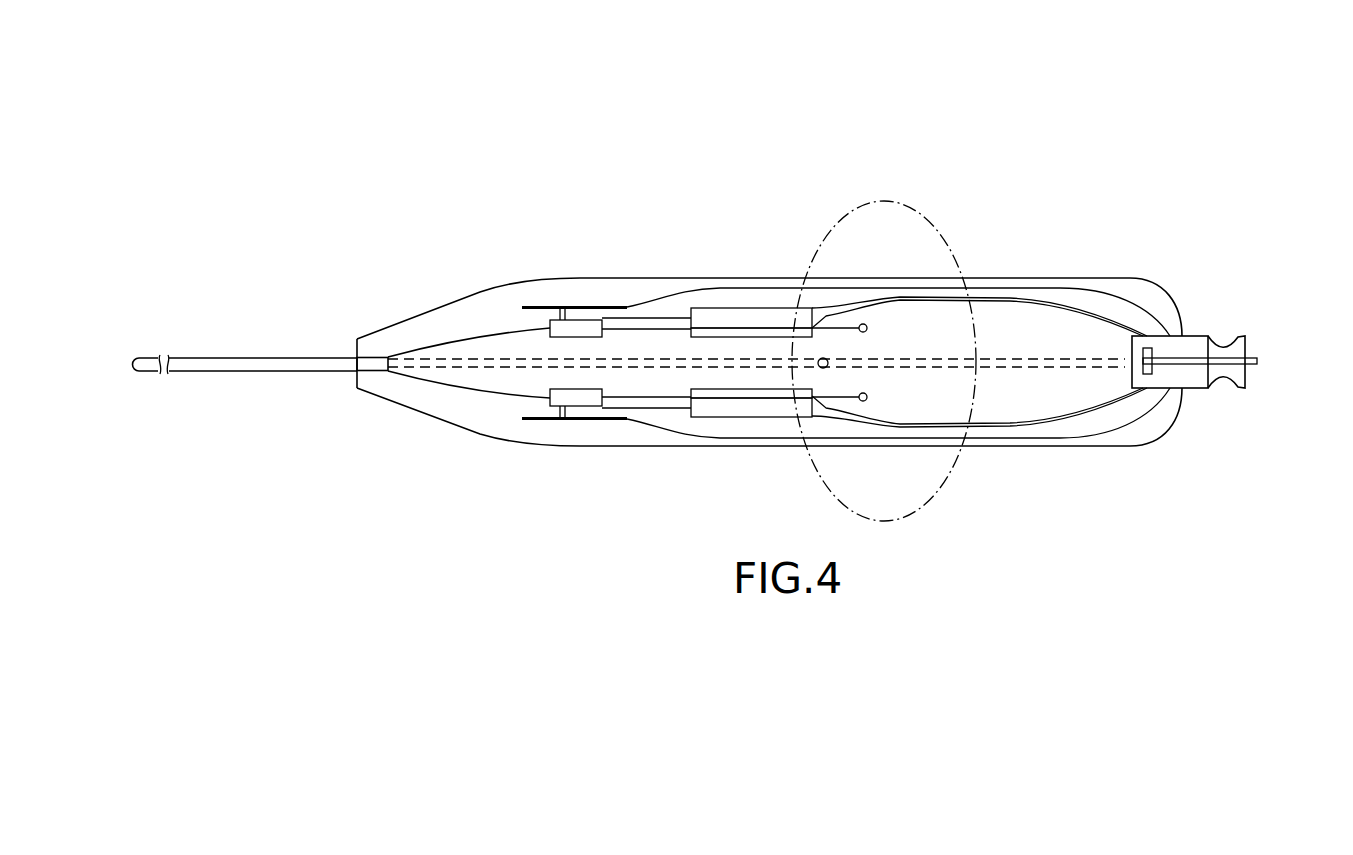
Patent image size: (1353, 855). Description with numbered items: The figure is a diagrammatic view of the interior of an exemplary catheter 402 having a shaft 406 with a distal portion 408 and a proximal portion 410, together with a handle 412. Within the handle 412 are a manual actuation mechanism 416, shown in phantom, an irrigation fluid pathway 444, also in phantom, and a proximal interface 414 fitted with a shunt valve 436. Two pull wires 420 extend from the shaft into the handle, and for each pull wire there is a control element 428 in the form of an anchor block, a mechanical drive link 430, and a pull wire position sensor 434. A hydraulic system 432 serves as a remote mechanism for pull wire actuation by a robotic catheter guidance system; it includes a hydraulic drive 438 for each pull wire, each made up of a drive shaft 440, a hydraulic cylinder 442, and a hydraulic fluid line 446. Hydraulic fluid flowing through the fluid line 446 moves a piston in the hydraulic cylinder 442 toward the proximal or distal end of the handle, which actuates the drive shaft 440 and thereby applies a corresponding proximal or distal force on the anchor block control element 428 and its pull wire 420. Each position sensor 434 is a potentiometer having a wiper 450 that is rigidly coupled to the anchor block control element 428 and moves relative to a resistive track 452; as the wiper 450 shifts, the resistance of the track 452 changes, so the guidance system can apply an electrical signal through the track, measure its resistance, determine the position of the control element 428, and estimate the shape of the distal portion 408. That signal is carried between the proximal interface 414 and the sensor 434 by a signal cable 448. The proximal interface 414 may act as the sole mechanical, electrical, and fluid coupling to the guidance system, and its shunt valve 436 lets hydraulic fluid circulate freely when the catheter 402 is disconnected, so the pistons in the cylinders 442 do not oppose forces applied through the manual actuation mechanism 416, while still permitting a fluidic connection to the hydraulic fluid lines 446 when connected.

The catheter 402 is at (882, 152).
The shaft 406 is at (187, 357).
The distal portion 408 is at (133, 360).
The proximal portion 410 is at (292, 357).
The handle 412 is at (690, 278).
The proximal interface 414 is at (1218, 306).
The manual actuation mechanism 416 is at (907, 213).
The pull wires 420 is at (425, 348).
The control element 428 is at (560, 322).
The mechanical drive link 430 is at (632, 320).
The hydraulic system 432 is at (777, 278).
The pull wire position sensor 434 is at (580, 426).
The shunt valve 436 is at (1247, 353).
The hydraulic drive 438 is at (753, 423).
The drive shaft 440 is at (648, 410).
The hydraulic cylinder 442 is at (693, 416).
The irrigation fluid pathway 444 is at (997, 358).
The hydraulic fluid line 446 is at (1012, 423).
The signal cable 448 is at (1113, 420).
The wiper 450 is at (527, 409).
The resistive track 452 is at (533, 423).